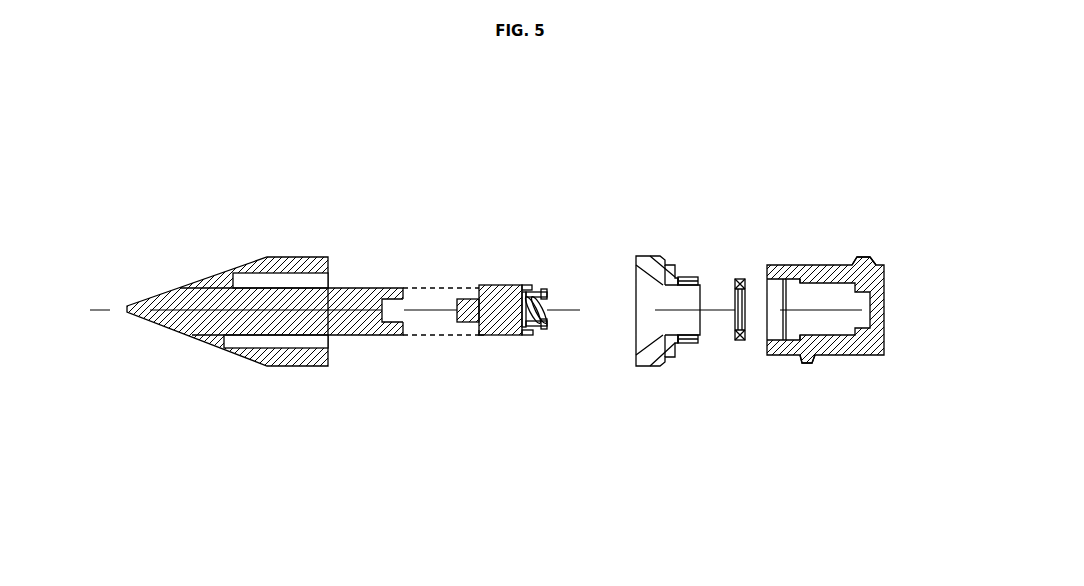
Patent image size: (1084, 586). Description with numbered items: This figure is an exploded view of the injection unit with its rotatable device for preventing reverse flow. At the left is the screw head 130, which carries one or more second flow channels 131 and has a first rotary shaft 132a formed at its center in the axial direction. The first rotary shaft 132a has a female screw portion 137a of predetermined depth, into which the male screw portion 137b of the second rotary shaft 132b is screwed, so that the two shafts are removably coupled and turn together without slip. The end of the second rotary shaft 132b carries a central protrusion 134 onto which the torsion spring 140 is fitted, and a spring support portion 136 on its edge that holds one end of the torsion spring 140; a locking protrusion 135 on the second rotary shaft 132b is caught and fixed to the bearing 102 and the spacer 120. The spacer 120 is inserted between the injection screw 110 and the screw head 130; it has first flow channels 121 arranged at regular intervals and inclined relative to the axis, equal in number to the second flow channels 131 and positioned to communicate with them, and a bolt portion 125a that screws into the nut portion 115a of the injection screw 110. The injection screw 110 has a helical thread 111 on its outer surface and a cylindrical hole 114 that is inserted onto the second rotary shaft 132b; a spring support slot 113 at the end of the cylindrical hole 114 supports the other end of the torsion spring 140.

The screw head 130 is at (305, 245).
The second flow channels 131 is at (247, 352).
The first rotary shaft 132a is at (358, 337).
The second rotary shaft 132b is at (506, 322).
The locking protrusion 135 is at (478, 342).
The spring support portion 136 is at (528, 338).
The female screw portion 137a is at (393, 288).
The male screw portion 137b is at (465, 299).
The torsion spring 140 is at (531, 293).
The protrusion 134 is at (548, 297).
The spacer 120 is at (642, 372).
The first flow channels 121 is at (663, 358).
The bolt portion 125a is at (688, 277).
The bearing 102 is at (737, 343).
The injection screw 110 is at (788, 370).
The nut portion 115a is at (783, 279).
The cylindrical hole 114 is at (829, 275).
The helical thread 111 is at (862, 258).
The spring support slot 113 is at (873, 266).